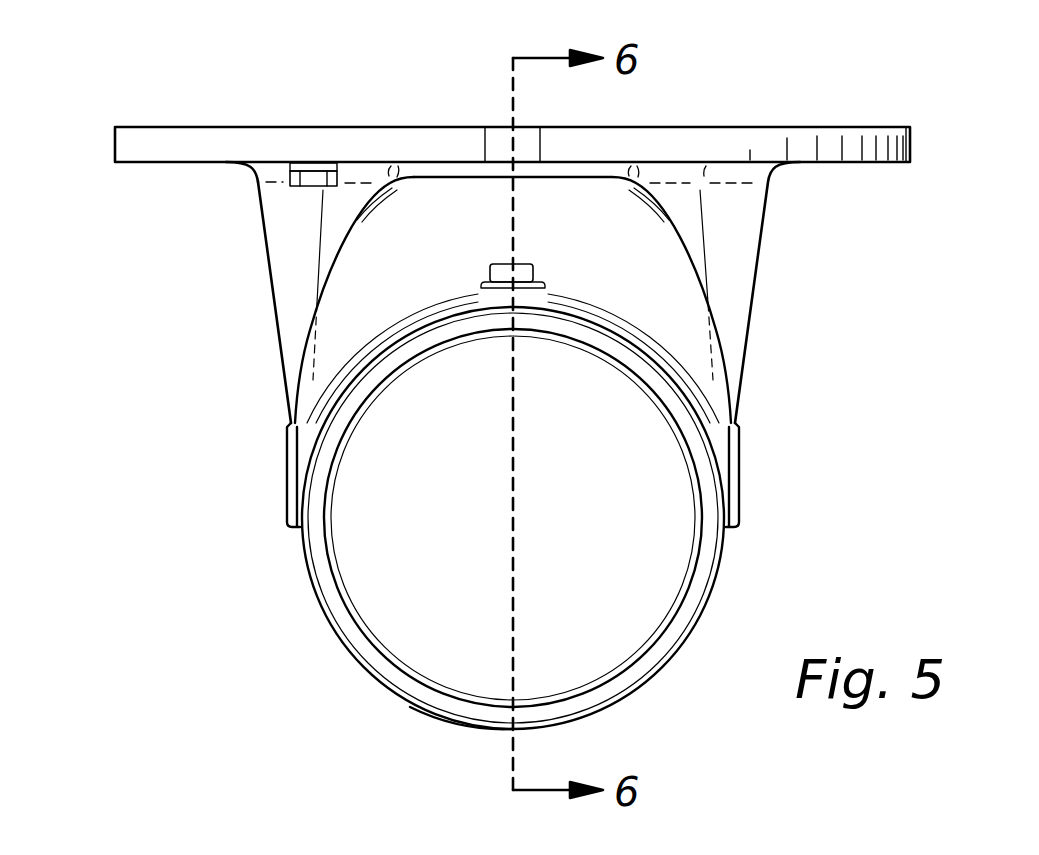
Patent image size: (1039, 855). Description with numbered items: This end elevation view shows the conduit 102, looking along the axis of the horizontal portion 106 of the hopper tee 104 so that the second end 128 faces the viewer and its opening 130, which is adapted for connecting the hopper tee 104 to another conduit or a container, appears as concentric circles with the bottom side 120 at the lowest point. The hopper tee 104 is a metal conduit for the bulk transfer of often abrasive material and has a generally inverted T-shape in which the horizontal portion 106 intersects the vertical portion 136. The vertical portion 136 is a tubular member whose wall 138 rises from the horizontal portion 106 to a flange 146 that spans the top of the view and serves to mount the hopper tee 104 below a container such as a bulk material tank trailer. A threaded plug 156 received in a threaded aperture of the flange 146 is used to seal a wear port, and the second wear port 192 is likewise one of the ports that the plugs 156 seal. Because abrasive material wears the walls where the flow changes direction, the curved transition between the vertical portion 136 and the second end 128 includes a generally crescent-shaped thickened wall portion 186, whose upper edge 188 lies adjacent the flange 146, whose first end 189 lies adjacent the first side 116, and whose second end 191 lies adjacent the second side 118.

The conduit 102 is at (358, 70).
The hopper tee 104 is at (115, 127).
The flange 146 is at (912, 127).
The threaded plug 156 is at (308, 185).
The vertical portion 136 is at (914, 240).
The wall 138 is at (266, 243).
The first side 116 is at (280, 340).
The second side 118 is at (743, 353).
The upper edge 188 is at (680, 253).
The thickened wall portion 186 is at (690, 333).
The first end 189 is at (307, 452).
The second end 191 is at (740, 440).
The horizontal portion 106 is at (792, 590).
The second end 128 is at (305, 585).
The opening 130 is at (367, 633).
The bottom side 120 is at (410, 707).
The second wear port 192 is at (537, 262).